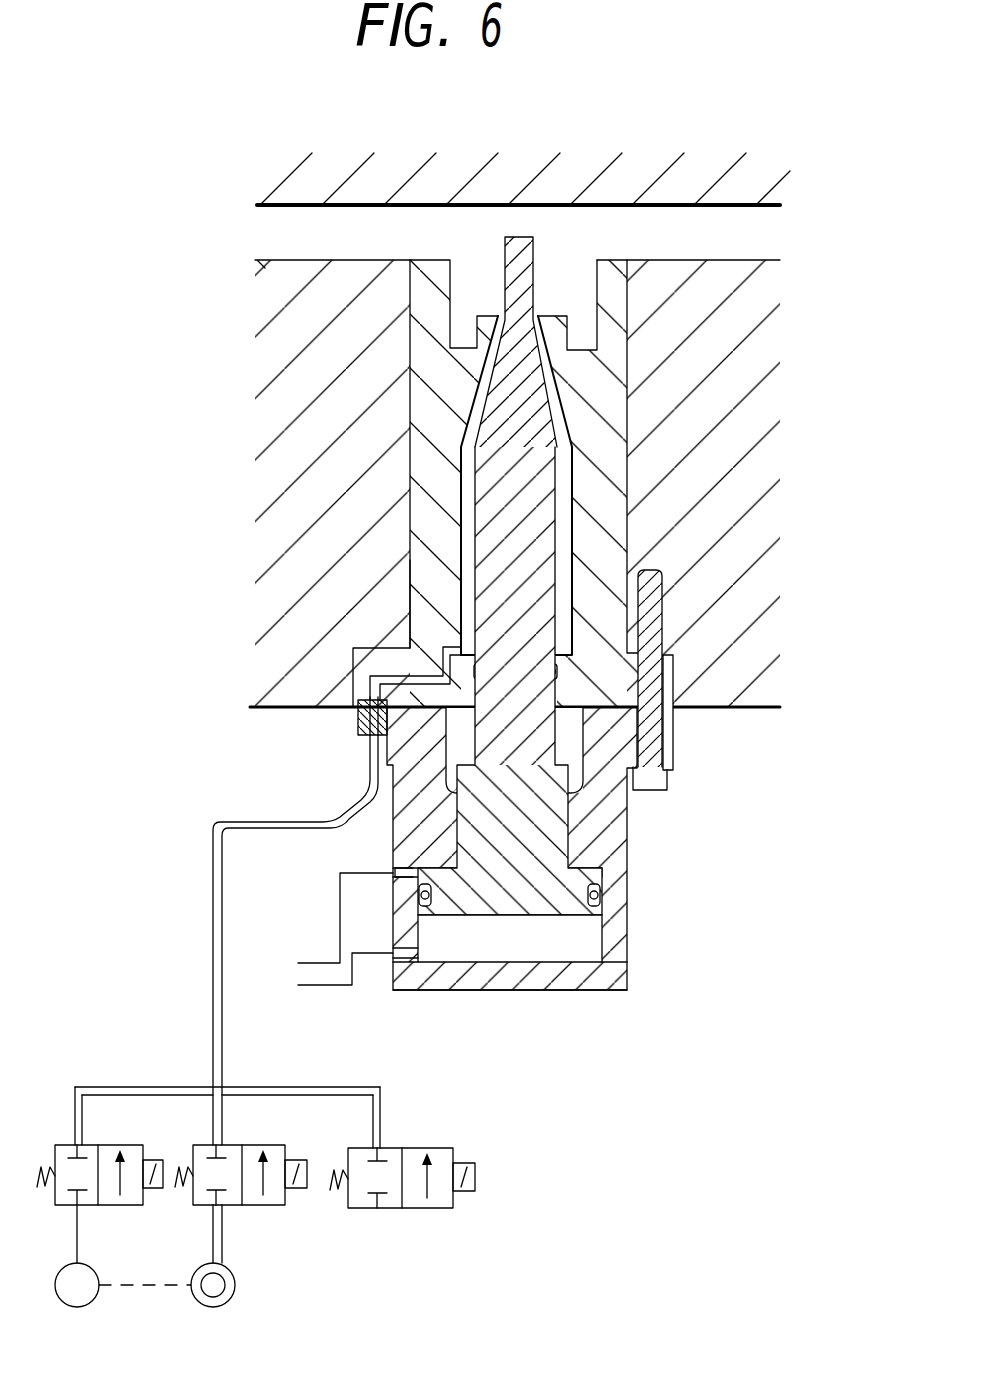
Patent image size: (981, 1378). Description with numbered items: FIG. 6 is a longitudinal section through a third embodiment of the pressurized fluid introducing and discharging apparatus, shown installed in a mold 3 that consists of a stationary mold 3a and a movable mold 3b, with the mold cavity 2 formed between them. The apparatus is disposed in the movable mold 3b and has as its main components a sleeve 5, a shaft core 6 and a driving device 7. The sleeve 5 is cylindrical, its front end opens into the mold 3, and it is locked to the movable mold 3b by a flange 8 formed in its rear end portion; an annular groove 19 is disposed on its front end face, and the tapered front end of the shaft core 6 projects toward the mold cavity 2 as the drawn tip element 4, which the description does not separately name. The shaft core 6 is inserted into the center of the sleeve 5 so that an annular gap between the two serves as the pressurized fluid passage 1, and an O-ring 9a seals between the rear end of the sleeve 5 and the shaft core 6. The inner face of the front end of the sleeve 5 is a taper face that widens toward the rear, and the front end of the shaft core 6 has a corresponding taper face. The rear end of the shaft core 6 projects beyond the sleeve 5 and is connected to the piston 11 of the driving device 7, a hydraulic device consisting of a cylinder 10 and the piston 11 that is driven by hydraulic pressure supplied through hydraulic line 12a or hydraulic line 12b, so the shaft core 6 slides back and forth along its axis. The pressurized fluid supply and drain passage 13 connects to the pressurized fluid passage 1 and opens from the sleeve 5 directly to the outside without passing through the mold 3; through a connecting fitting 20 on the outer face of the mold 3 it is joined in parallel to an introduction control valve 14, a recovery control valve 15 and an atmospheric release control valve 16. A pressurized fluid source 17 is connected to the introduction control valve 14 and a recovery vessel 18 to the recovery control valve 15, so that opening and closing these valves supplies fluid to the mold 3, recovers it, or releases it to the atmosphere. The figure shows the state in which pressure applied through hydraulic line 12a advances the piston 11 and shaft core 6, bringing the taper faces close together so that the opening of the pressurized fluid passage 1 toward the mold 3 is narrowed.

The pressurized fluid passage 1 is at (562, 497).
The mold cavity 2 is at (377, 222).
The mold 3 is at (138, 155).
The stationary mold 3a is at (277, 182).
The movable mold 3b is at (283, 305).
The nozzle tip 4 is at (505, 243).
The sleeve 5 is at (625, 367).
The shaft core 6 is at (527, 553).
The driving device 7 is at (645, 852).
The flange 8 is at (673, 677).
The O-ring 9a is at (410, 617).
The cylinder 10 is at (627, 957).
The piston 11 is at (483, 910).
The hydraulic line 12a is at (315, 988).
The hydraulic line 12b is at (320, 960).
The pressurized fluid supply and drain passage 13 is at (412, 661).
The introduction control valve 14 is at (263, 1206).
The recovery control valve 15 is at (55, 1206).
The atmospheric release control valve 16 is at (428, 1209).
The pressurized fluid source 17 is at (237, 1285).
The recovery vessel 18 is at (97, 1272).
The annular groove 19 is at (580, 333).
The connecting fitting 20 is at (358, 725).